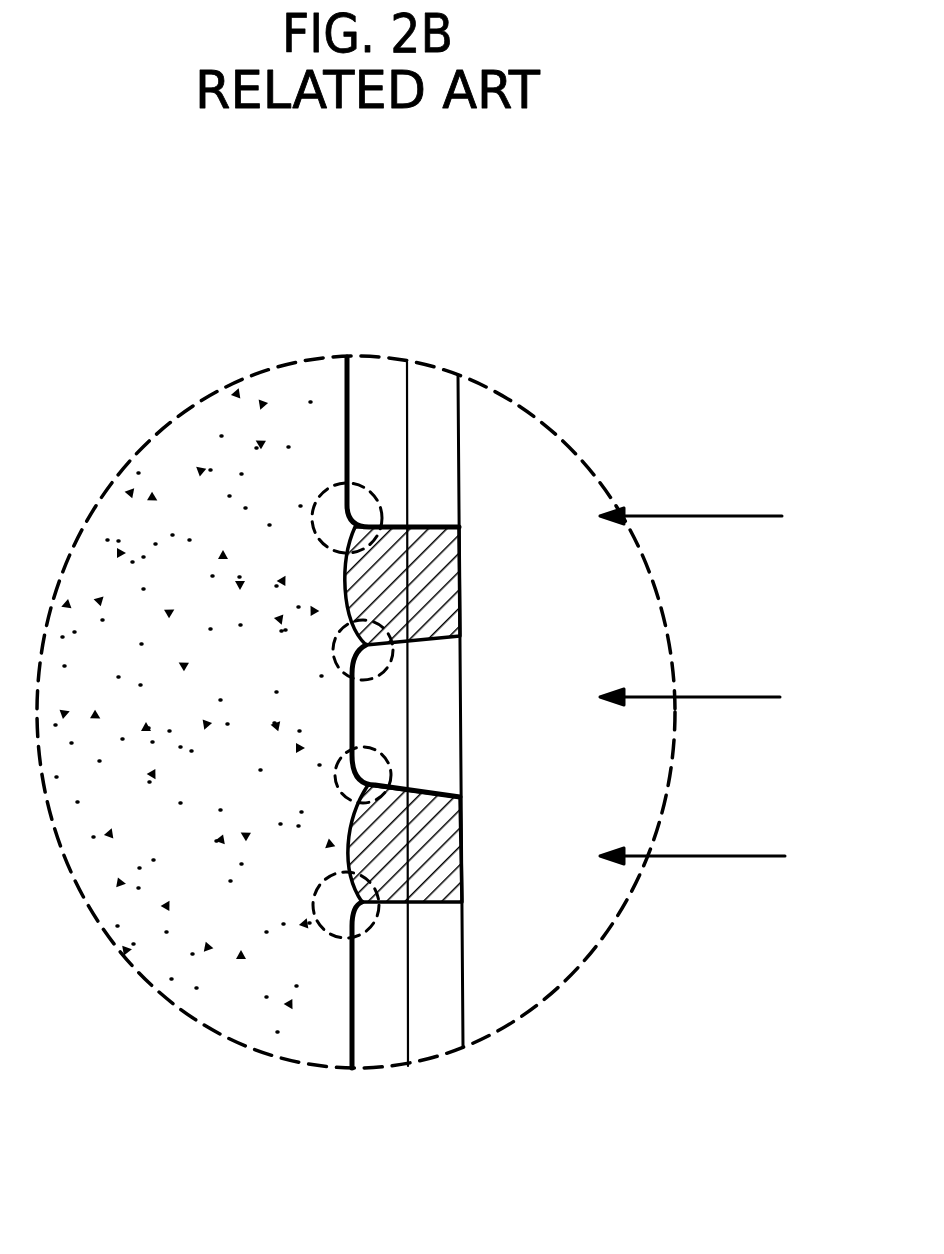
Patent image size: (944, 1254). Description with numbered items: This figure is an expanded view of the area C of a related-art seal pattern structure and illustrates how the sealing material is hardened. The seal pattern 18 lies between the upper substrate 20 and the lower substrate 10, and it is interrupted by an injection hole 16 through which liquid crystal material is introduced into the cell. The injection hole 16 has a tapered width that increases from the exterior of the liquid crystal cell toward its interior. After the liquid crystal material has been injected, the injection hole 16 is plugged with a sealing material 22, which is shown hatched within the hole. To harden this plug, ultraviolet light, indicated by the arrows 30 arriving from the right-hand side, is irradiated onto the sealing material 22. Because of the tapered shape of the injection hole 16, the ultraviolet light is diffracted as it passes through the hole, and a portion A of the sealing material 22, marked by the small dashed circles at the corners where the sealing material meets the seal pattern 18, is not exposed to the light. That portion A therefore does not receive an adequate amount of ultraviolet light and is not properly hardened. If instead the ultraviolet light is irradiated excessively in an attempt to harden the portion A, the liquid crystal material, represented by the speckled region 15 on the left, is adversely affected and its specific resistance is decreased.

The lower substrate 10 is at (433, 395).
The porous / particulate layer 15 is at (187, 945).
The injection hole 16 is at (457, 714).
The seal pattern 18 is at (360, 727).
The upper substrate 20 is at (375, 385).
The sealing material 22 is at (461, 580).
The ion beam / etch direction arrows 30 is at (714, 686).
The portion of the sealing material A is at (383, 518).
The area C is at (543, 385).